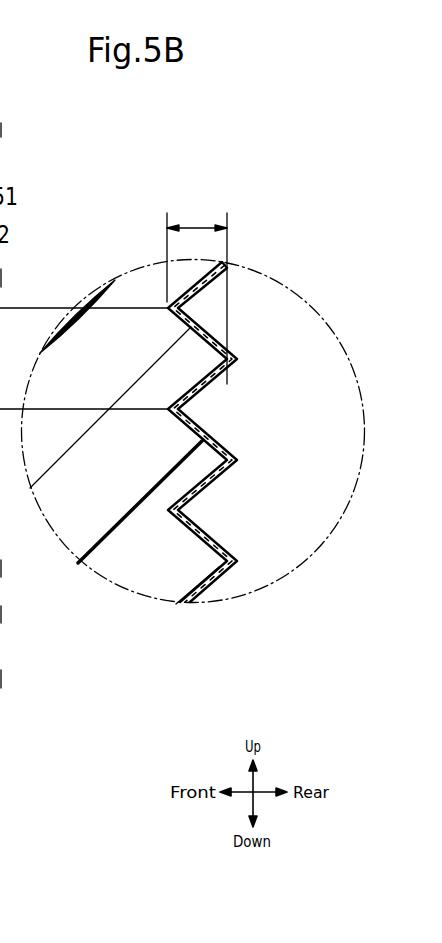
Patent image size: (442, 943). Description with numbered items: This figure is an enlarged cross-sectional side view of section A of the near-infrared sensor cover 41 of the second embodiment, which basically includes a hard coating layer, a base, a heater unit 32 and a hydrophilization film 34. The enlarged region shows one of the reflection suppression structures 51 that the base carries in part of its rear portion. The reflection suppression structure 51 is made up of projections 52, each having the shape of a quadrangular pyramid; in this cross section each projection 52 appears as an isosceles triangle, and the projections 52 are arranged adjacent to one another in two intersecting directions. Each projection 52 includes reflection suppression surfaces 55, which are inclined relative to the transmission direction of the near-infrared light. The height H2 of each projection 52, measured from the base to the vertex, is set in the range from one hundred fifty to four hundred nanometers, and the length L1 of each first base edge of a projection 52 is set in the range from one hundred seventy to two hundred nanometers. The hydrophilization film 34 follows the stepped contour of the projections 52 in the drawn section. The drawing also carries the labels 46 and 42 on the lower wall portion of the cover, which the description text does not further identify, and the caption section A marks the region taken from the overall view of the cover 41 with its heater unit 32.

The height of projection H2 is at (200, 226).
The projection 52 is at (192, 276).
The reflection suppression surface 55 is at (215, 293).
The reflection suppression structure 51 is at (318, 359).
The hydrophilization film 34 is at (238, 461).
The lower wall 46 is at (135, 588).
The side wall 42 is at (197, 585).
The length of first base edge L1 is at (2, 380).
The section A is at (0, 535).
The near-infrared sensor cover 41 is at (16, 108).
The heater unit 32 is at (28, 507).